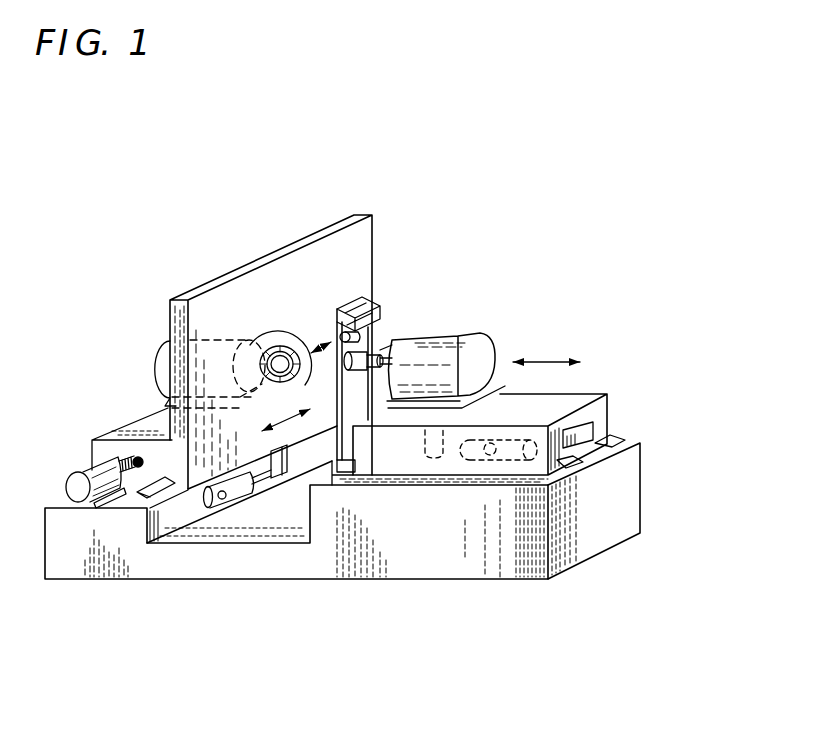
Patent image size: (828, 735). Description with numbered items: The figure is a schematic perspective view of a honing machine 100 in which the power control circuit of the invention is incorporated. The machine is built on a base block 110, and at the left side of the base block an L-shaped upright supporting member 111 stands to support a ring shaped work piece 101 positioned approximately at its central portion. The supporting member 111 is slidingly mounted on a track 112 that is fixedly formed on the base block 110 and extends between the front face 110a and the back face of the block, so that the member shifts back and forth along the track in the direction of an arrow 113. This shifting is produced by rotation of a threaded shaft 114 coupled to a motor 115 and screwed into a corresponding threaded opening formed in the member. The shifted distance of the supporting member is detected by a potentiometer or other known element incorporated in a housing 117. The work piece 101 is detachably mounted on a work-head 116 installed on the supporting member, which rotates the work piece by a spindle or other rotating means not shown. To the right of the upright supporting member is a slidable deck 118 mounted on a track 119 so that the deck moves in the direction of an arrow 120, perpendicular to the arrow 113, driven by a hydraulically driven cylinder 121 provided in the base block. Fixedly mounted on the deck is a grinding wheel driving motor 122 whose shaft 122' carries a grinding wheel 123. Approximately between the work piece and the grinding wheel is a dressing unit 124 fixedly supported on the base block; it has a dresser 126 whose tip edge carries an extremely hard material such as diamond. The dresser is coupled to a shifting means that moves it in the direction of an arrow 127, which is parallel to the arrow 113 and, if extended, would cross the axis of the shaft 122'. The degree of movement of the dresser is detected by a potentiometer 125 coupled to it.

The honing machine 100 is at (584, 283).
The work piece 101 is at (267, 343).
The base block 110 is at (630, 478).
The front face 110a is at (97, 557).
The L-shaped upright supporting member 111 is at (367, 237).
The track 112 is at (152, 496).
The arrow 113 is at (283, 414).
The threaded shaft 114 is at (121, 463).
The motor 115 is at (80, 472).
The work-head 116 is at (158, 372).
The housing 117 is at (235, 500).
The slidable deck 118 is at (600, 407).
The track 119 is at (612, 440).
The arrow 120 is at (547, 358).
The hydraulically driven cylinder 121 is at (480, 458).
The grinding wheel driving motor 122 is at (474, 345).
The shaft 122' is at (460, 294).
The grinding wheel 123 is at (386, 360).
The dressing unit 124 is at (387, 305).
The potentiometer 125 is at (362, 356).
The dresser 126 is at (327, 345).
The arrow 127 is at (322, 346).